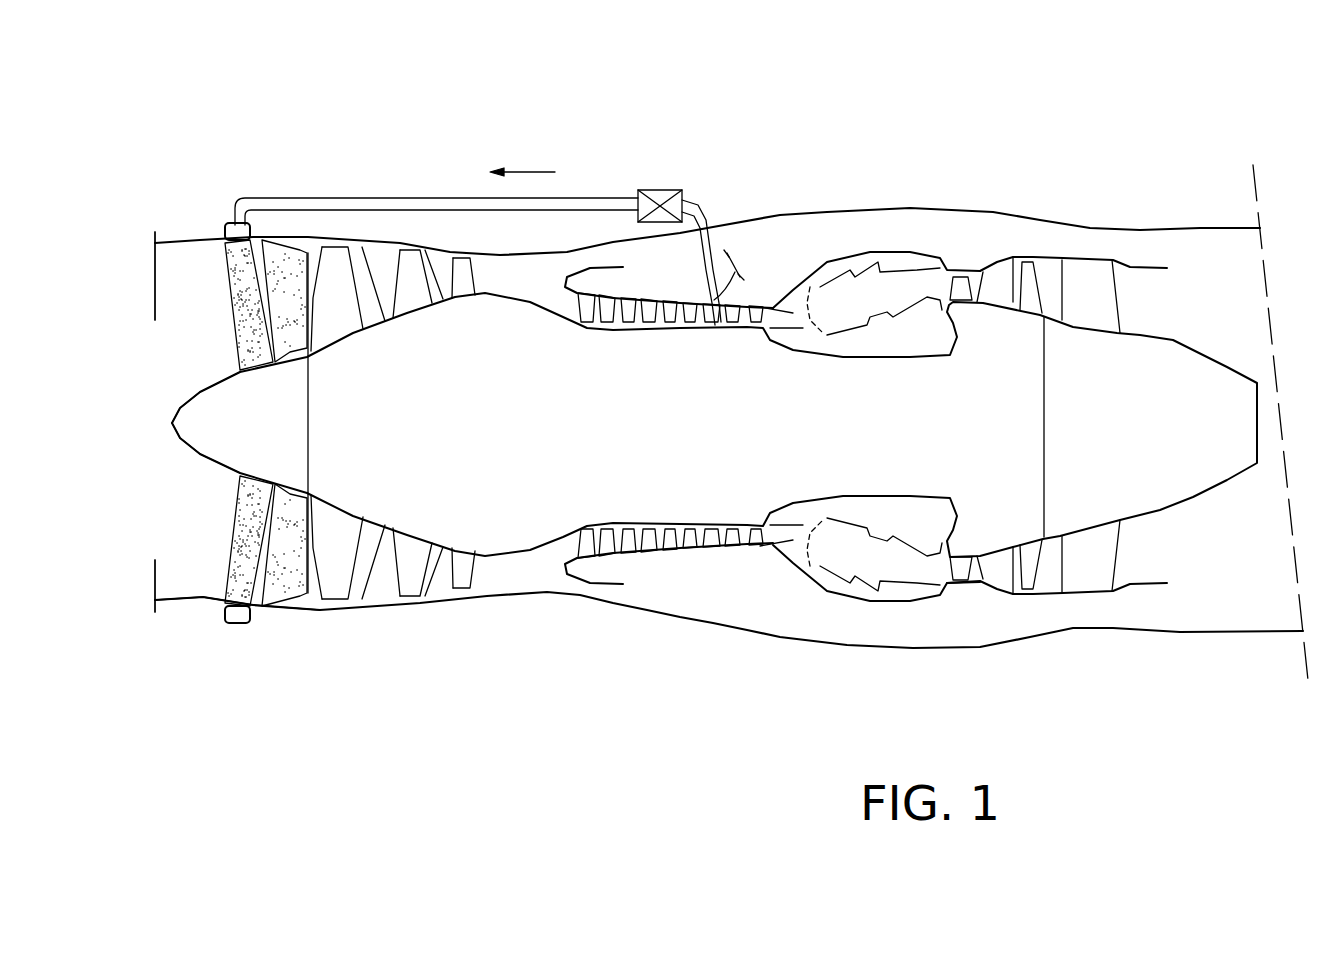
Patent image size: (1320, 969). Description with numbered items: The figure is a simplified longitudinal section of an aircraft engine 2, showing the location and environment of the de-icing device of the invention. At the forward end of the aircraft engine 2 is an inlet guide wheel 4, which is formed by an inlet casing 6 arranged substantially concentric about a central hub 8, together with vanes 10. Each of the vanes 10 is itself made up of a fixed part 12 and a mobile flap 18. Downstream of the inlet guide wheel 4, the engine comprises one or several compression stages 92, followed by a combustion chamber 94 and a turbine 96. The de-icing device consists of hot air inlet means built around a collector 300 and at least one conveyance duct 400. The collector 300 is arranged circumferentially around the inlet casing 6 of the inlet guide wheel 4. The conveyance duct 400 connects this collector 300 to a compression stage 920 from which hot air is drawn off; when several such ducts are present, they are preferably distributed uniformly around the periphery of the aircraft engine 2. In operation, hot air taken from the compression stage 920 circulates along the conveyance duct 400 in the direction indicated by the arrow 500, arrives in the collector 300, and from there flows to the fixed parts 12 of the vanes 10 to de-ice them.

The aircraft engine 2 is at (731, 360).
The inlet guide wheel 4 is at (225, 492).
The inlet casing 6 is at (223, 634).
The central hub 8 is at (182, 422).
The vanes 10 is at (223, 305).
The fixed part 12 is at (223, 541).
The mobile flap 18 is at (285, 456).
The compression stages 92 is at (550, 501).
The combustion chamber 94 is at (870, 504).
The turbine 96 is at (1057, 507).
The collector 300 is at (211, 386).
The conveyance duct 400 is at (478, 211).
The arrow 500 is at (523, 137).
The compression stage 920 is at (721, 334).